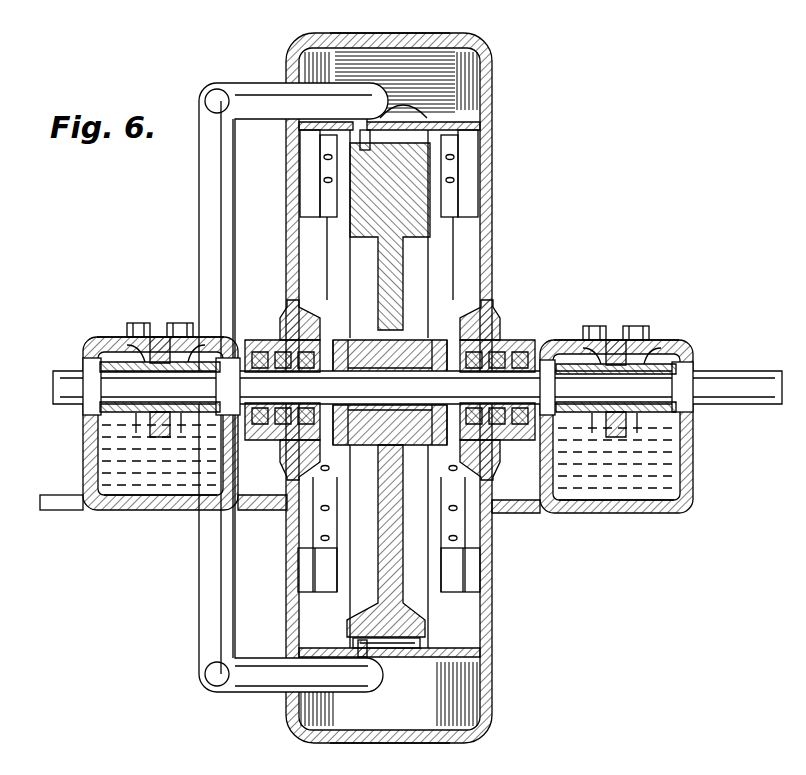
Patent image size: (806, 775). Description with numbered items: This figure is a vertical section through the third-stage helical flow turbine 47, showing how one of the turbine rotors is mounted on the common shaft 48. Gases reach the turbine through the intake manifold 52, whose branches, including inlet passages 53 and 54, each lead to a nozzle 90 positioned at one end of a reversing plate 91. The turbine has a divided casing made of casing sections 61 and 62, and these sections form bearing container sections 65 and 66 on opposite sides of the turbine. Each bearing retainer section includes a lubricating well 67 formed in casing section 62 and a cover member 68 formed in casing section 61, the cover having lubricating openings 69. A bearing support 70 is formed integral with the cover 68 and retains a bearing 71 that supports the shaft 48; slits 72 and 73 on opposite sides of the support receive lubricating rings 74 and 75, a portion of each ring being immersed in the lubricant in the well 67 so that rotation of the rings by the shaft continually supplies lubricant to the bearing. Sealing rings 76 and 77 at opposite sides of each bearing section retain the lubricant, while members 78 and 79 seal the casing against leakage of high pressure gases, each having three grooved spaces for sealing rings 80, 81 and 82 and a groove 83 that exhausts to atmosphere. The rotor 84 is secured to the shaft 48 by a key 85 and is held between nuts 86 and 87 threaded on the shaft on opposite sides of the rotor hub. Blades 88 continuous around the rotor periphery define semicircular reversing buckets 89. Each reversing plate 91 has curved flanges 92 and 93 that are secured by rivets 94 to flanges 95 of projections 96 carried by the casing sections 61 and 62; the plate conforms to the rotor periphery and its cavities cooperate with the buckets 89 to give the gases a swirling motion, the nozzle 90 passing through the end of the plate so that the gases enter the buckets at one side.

The helical flow turbine 47 is at (386, 33).
The common shaft 48 is at (50, 400).
The intake manifold 52 is at (199, 190).
The inlet passage 53 is at (243, 84).
The inlet passage 54 is at (238, 695).
The casing section 61 is at (438, 33).
The casing section 62 is at (382, 744).
The bearing container section 65 is at (112, 511).
The bearing container section 66 is at (622, 514).
The lubricating well 67 is at (150, 496).
The cover member 68 is at (95, 338).
The lubricating opening 69 is at (157, 330).
The bearing support 70 is at (165, 436).
The bearing 71 is at (178, 360).
The slit 72 is at (130, 345).
The slit 73 is at (190, 358).
The lubricating ring 74 is at (388, 379).
The lubricating ring 75 is at (388, 395).
The sealing ring 76 is at (88, 410).
The sealing ring 77 is at (240, 386).
The sealing member 78 is at (255, 340).
The sealing member 79 is at (530, 342).
The sealing ring 80 is at (255, 441).
The sealing ring 81 is at (500, 352).
The sealing ring 82 is at (390, 373).
The groove 83 is at (390, 373).
The rotor 84 is at (445, 275).
The key 85 is at (395, 372).
The nut 86 is at (437, 340).
The nut 87 is at (342, 340).
The blade 88 is at (420, 651).
The bucket 89 is at (400, 651).
The nozzle 90 is at (367, 122).
The reversing plate 91 is at (436, 118).
The curved flange 92 is at (300, 140).
The curved flange 93 is at (455, 160).
The rivet 94 is at (323, 180).
The flange 95 is at (340, 122).
The projection 96 is at (318, 205).